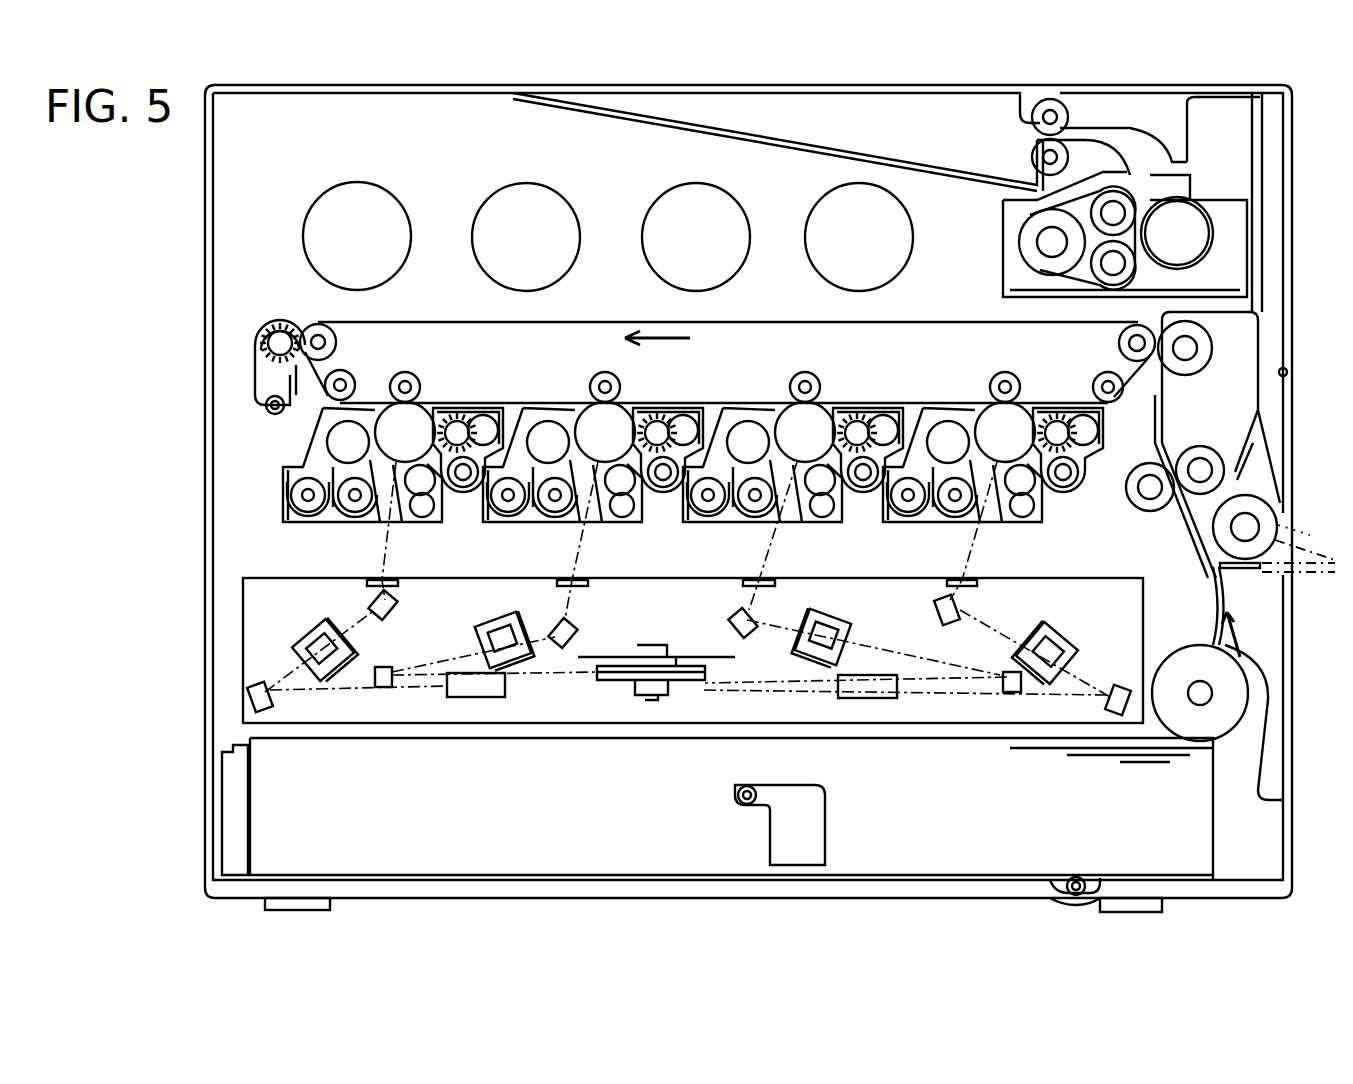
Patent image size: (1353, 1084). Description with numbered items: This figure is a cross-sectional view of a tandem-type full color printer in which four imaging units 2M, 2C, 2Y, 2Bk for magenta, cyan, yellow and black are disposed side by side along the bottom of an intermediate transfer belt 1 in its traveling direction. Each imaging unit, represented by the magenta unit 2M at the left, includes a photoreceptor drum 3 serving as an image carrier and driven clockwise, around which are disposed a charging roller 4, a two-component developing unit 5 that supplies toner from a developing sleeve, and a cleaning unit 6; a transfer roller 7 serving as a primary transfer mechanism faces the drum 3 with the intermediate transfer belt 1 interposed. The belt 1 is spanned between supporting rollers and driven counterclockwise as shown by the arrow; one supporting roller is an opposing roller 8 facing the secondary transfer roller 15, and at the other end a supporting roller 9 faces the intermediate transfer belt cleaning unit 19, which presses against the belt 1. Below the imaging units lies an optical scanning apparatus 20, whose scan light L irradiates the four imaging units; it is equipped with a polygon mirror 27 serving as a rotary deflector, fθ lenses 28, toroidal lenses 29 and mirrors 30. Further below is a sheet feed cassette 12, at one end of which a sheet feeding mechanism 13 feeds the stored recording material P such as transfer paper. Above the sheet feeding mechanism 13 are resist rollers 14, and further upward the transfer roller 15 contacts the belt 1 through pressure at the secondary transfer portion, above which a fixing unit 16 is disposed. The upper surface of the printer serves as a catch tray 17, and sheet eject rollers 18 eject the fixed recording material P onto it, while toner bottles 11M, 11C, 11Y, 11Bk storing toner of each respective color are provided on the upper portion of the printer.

The intermediate transfer belt 1 is at (927, 322).
The imaging unit for magenta 2M is at (388, 463).
The imaging unit for cyan 2C is at (593, 488).
The imaging unit for yellow 2Y is at (793, 488).
The imaging unit for black 2Bk is at (993, 488).
The photoreceptor drum 3 is at (429, 404).
The charging roller 4 is at (435, 502).
The developing unit 5 is at (350, 465).
The cleaning unit 6 is at (476, 425).
The transfer roller 7 is at (396, 382).
The opposing roller 8 is at (1120, 345).
The supporting roller 9 is at (312, 330).
The toner bottle 11M is at (320, 212).
The toner bottle 11C is at (489, 212).
The toner bottle 11Y is at (660, 212).
The toner bottle 11Bk is at (822, 212).
The sheet feed cassette 12 is at (1222, 805).
The sheet feeding mechanism 13 is at (1196, 655).
The resist rollers 14 is at (1138, 510).
The transfer roller 15 is at (1192, 375).
The fixing unit 16 is at (1003, 247).
The catch tray 17 is at (905, 178).
The sheet eject rollers 18 is at (1034, 157).
The intermediate transfer belt cleaning unit 19 is at (260, 383).
The optical scanning apparatus 20 is at (274, 578).
The polygon mirror 27 is at (690, 693).
The fθ lenses 28 is at (497, 698).
The toroidal lenses 29 is at (308, 638).
The mirrors 30 is at (256, 682).
The laser beam L is at (360, 551).
The recording material P is at (606, 865).